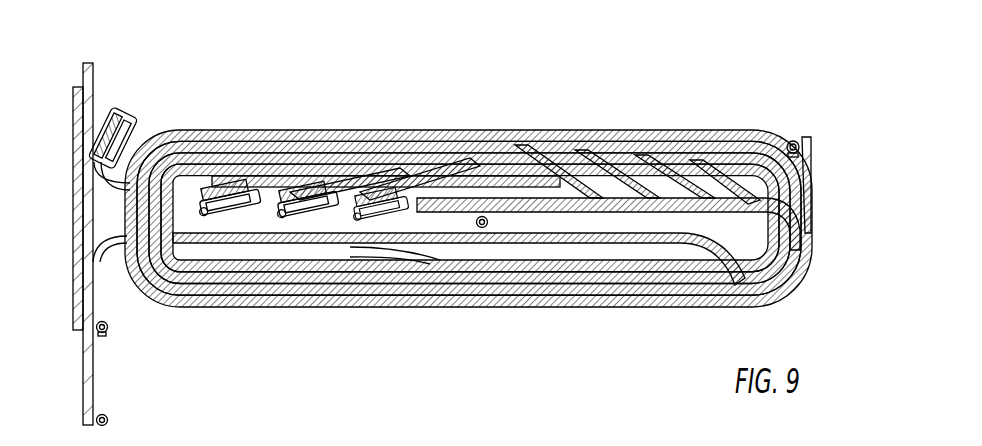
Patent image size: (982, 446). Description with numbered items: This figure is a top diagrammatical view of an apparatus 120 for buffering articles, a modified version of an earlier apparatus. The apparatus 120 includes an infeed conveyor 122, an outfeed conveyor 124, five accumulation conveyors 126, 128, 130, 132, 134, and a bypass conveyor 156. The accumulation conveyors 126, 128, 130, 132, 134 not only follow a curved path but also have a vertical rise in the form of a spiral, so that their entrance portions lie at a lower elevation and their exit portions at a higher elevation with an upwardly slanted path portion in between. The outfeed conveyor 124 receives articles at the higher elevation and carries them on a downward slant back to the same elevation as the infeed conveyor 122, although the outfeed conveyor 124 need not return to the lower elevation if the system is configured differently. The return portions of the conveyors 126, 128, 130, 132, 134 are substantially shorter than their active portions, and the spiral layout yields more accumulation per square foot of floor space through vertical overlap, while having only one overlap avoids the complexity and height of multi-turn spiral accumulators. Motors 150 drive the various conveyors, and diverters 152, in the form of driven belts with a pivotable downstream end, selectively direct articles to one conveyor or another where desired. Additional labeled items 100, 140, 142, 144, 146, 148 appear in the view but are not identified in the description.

The fastener 100 is at (795, 140).
The apparatus 120 is at (676, 61).
The infeed conveyor 122 is at (95, 100).
The outfeed conveyor 124 is at (92, 352).
The accumulation conveyor 126 is at (437, 133).
The accumulation conveyor 128 is at (504, 133).
The accumulation conveyor 130 is at (567, 162).
The accumulation conveyor 132 is at (676, 165).
The accumulation conveyor 134 is at (721, 172).
The mounting post 140 is at (808, 182).
The cable strand 142 is at (618, 170).
The cable strand 144 is at (529, 155).
The inner cable strand 146 is at (445, 193).
The cable segment 148 is at (345, 200).
The motors 150 is at (484, 228).
The diverters 152 is at (127, 130).
The bypass conveyor 156 is at (74, 210).